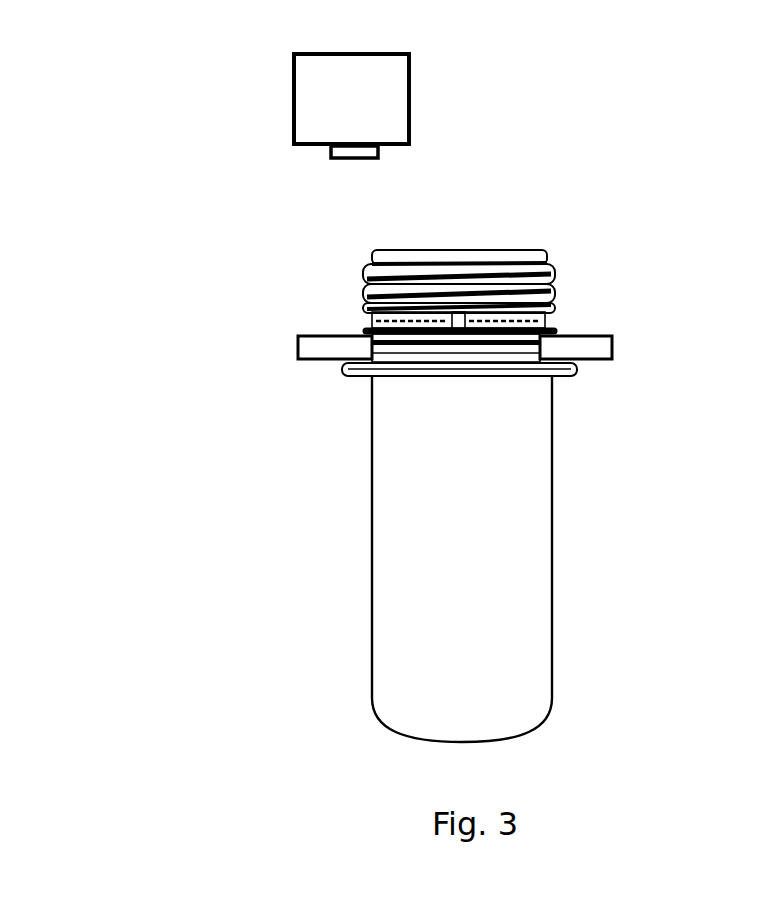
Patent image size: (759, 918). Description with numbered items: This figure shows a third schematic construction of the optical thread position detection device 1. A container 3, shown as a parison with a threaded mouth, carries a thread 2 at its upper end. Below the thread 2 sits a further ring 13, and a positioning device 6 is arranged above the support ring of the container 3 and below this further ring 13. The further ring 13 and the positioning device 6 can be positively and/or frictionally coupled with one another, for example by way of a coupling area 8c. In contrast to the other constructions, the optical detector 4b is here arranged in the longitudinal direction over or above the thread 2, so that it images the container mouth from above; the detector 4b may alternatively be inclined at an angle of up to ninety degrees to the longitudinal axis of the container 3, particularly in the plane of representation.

The optical thread position detection device 1 is at (93, 78).
The optical detector 4b is at (311, 128).
The thread 2 is at (550, 272).
The coupling area 8c is at (555, 323).
The further ring 13 is at (368, 333).
The positioning device 6 is at (602, 350).
The container 3 is at (553, 678).